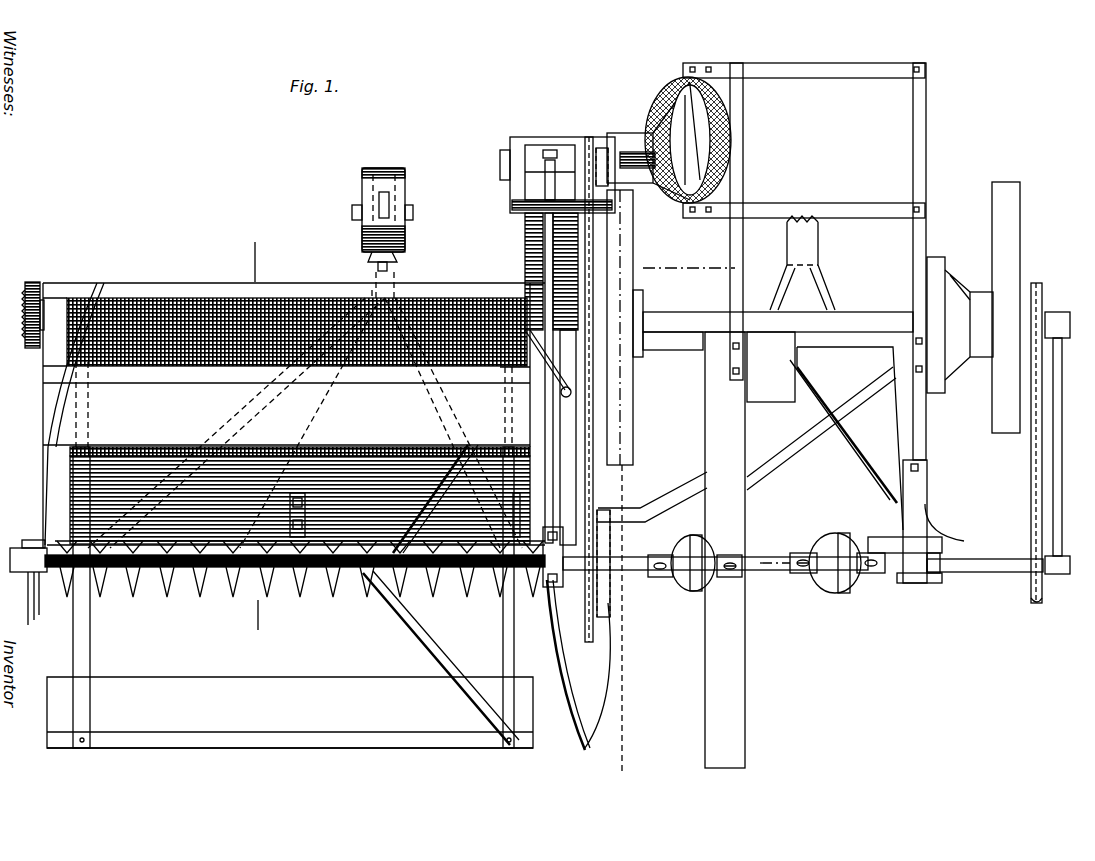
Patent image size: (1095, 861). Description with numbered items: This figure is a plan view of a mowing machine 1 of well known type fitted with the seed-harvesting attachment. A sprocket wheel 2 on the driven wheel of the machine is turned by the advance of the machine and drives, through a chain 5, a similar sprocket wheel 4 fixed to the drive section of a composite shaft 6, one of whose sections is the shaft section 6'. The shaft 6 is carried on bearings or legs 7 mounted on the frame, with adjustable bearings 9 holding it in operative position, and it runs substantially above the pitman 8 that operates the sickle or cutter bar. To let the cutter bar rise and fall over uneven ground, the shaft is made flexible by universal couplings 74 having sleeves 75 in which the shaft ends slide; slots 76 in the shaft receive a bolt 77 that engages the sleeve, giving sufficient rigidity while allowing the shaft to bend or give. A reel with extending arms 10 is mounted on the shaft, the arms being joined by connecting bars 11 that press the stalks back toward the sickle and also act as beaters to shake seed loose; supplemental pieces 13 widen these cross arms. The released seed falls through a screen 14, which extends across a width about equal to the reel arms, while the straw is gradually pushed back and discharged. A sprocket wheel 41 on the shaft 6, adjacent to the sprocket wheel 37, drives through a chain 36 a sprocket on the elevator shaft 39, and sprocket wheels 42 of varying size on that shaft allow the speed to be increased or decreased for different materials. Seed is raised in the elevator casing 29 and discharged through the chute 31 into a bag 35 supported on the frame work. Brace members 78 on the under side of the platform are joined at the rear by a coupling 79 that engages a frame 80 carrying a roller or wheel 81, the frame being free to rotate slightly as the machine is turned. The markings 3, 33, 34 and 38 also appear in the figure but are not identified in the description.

The mowing machine 1 is at (953, 266).
The sprocket wheel 2 is at (1042, 322).
The section line 3- 3 is at (275, 262).
The sprocket wheel 4 is at (1044, 592).
The chain 5 is at (1031, 484).
The composite shaft 6 is at (985, 551).
The shaft section 6' is at (786, 540).
The bearings or legs 7 is at (38, 575).
The pitman 8 is at (771, 557).
The adjustable bearings 9 is at (32, 576).
The reel arms 10 is at (90, 655).
The connecting bars 11 is at (365, 383).
The supplemental pieces 13 is at (233, 553).
The screen 14 is at (175, 300).
The elevator casing 29 is at (523, 270).
The chute 31 is at (640, 133).
The pinion 33 is at (25, 286).
The rack 34 is at (25, 330).
The bag 35 is at (705, 120).
The chain 36 is at (597, 425).
The sprocket wheel 37 is at (592, 620).
The chain 38 is at (588, 137).
The elevator shaft 39 is at (508, 160).
The sprocket wheel 41 is at (607, 522).
The sprocket wheels 42 is at (602, 148).
The universal couplings 74 is at (655, 580).
The sleeves 75 is at (660, 578).
The slots 76 is at (722, 578).
The bolt 77 is at (740, 560).
The brace members 78 is at (212, 425).
The coupling 79 is at (398, 272).
The frame 80 is at (372, 267).
The roller or wheel 81 is at (362, 190).